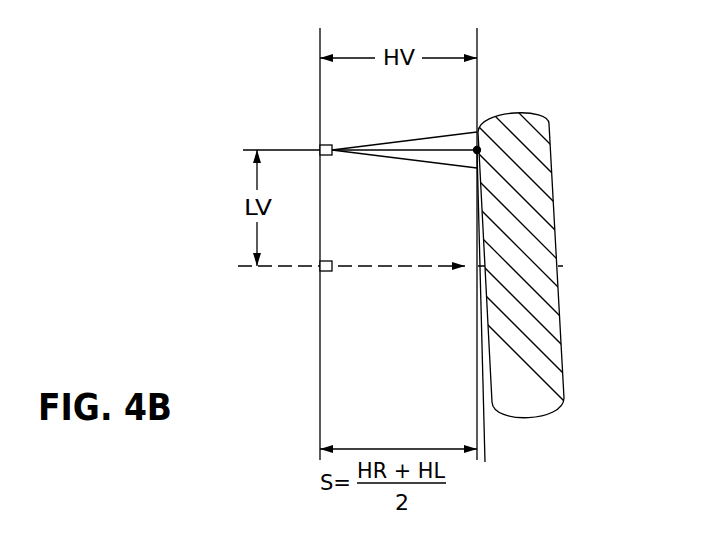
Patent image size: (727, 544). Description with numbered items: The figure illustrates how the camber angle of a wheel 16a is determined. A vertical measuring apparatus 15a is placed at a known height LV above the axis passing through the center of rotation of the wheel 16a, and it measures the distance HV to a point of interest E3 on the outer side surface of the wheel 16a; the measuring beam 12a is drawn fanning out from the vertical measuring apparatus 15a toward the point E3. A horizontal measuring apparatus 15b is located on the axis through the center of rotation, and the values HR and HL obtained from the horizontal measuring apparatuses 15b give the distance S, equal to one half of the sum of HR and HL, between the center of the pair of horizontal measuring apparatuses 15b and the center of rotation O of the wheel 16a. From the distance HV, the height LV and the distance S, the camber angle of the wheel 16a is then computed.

The vertical measuring apparatus 15a is at (326, 143).
The horizontal measuring apparatus 15b is at (322, 280).
The light beam / measuring light 12a is at (425, 148).
The wheel 16a is at (538, 180).
The point of interest on wheel E3 is at (495, 137).
The center of rotation of wheel O is at (502, 250).